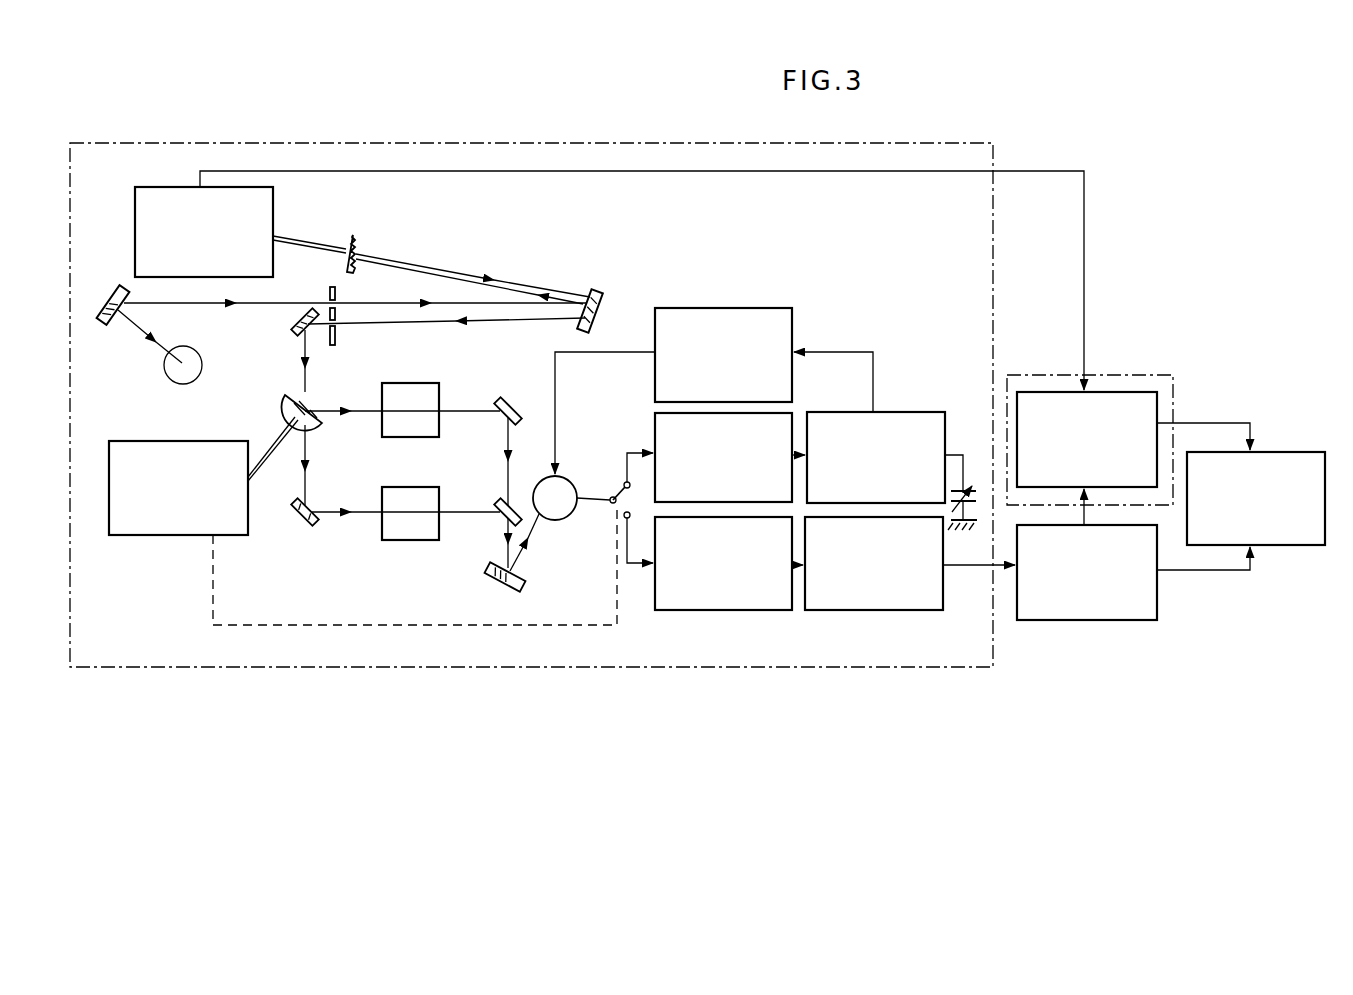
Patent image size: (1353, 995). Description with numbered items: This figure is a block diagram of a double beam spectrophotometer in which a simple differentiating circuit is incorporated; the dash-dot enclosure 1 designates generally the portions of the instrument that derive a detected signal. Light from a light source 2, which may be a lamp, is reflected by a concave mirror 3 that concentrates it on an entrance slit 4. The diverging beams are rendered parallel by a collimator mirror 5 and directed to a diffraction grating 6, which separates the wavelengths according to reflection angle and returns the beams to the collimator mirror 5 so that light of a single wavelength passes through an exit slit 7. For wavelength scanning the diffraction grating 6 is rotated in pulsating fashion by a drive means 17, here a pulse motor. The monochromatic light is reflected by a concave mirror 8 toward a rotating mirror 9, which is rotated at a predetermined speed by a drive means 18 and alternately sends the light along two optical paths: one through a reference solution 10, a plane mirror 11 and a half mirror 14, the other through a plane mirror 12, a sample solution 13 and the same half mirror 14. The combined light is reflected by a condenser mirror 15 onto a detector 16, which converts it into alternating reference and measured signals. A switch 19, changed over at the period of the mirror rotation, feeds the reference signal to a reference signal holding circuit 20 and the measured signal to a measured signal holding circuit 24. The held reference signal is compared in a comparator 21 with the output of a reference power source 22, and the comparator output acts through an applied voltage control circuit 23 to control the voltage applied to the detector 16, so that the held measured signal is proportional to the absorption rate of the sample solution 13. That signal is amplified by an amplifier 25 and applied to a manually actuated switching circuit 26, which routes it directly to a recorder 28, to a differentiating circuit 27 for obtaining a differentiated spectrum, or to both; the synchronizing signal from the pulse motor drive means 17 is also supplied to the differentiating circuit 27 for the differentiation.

The signal deriving portion of the spectrophotometer 1 is at (643, 143).
The light source 2 is at (164, 365).
The mirror 3 is at (112, 288).
The entrance slit 4 is at (330, 294).
The collimator mirror 5 is at (600, 306).
The diffraction grating 6 is at (358, 252).
The exit slit 7 is at (336, 336).
The concave mirror 8 is at (296, 327).
The rotating mirror 9 is at (290, 412).
The reference solution 10 is at (382, 395).
The plane mirror 11 is at (512, 399).
The plane mirror 12 is at (300, 521).
The sample solution 13 is at (382, 532).
The half mirror 14 is at (501, 501).
The condenser mirror 15 is at (490, 577).
The detector 16 is at (578, 481).
The diffraction grating drive means 17 is at (175, 187).
The rotating mirror drive means 18 is at (185, 535).
The switch 19 is at (616, 493).
The reference signal holding circuit 20 is at (655, 432).
The comparator 21 is at (922, 412).
The reference power source 22 is at (967, 484).
The applied voltage control circuit 23 is at (762, 308).
The measured signal holding circuit 24 is at (770, 610).
The amplifier 25 is at (897, 610).
The switching circuit 26 is at (1157, 593).
The differentiating circuit 27 is at (1137, 365).
The recorder 28 is at (1299, 449).